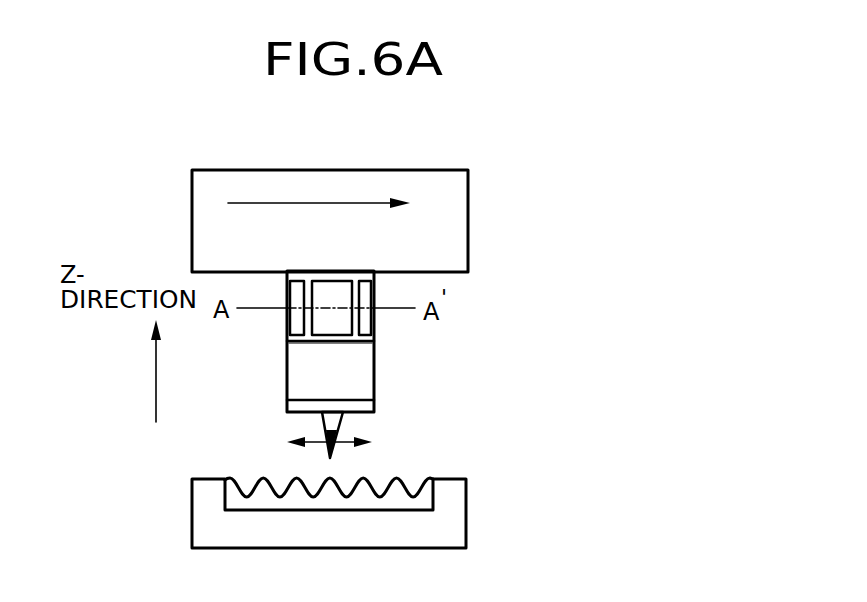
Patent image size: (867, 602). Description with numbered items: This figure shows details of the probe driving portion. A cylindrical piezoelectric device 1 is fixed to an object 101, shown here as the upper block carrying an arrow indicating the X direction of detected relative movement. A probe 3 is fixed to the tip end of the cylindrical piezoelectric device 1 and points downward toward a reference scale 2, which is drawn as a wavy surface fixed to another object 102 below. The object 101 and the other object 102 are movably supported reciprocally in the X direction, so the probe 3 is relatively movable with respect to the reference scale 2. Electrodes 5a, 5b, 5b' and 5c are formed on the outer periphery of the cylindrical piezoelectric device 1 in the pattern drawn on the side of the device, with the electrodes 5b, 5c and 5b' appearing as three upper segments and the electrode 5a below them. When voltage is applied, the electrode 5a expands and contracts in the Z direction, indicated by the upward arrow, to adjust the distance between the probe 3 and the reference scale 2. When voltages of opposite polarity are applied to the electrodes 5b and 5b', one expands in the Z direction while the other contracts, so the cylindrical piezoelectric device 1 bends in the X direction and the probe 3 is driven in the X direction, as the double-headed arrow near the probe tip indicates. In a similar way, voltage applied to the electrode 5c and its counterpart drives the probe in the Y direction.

The object 101 is at (458, 181).
The another object 102 is at (452, 505).
The cylindrical piezoelectric device 1 is at (373, 402).
The reference scale 2 is at (397, 491).
The probe 3 is at (330, 422).
The electrode 5a is at (353, 385).
The electrode 5b is at (246, 322).
The electrode 5b' is at (433, 323).
The electrode 5c is at (332, 318).